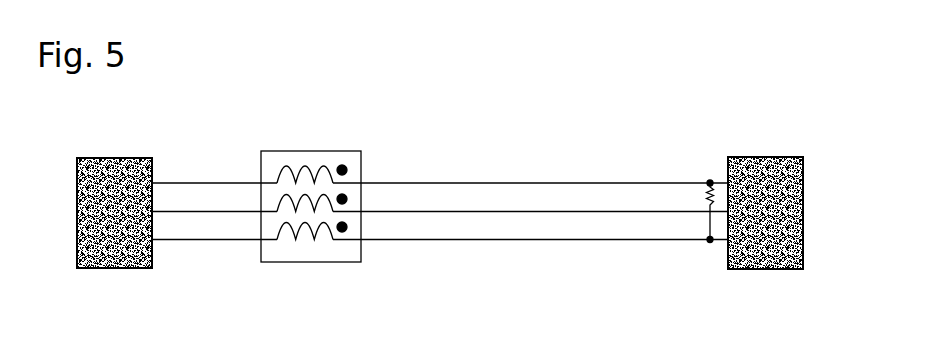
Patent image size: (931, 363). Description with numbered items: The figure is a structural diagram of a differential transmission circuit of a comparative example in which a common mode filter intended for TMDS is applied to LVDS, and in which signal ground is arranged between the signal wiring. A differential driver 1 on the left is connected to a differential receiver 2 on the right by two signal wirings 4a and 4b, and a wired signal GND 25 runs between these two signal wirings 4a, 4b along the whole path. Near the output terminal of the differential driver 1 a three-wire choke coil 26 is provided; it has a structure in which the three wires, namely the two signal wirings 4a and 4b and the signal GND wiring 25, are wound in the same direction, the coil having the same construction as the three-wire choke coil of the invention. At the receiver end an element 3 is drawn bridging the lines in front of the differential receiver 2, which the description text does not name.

The differential driver 1 is at (121, 270).
The differential receiver 2 is at (748, 233).
The resistor termination 3 is at (702, 197).
The signal wiring 4a is at (162, 180).
The signal wiring 4b is at (160, 242).
The signal GND wiring 25 is at (230, 212).
The three-wire choke coil 26 is at (332, 151).